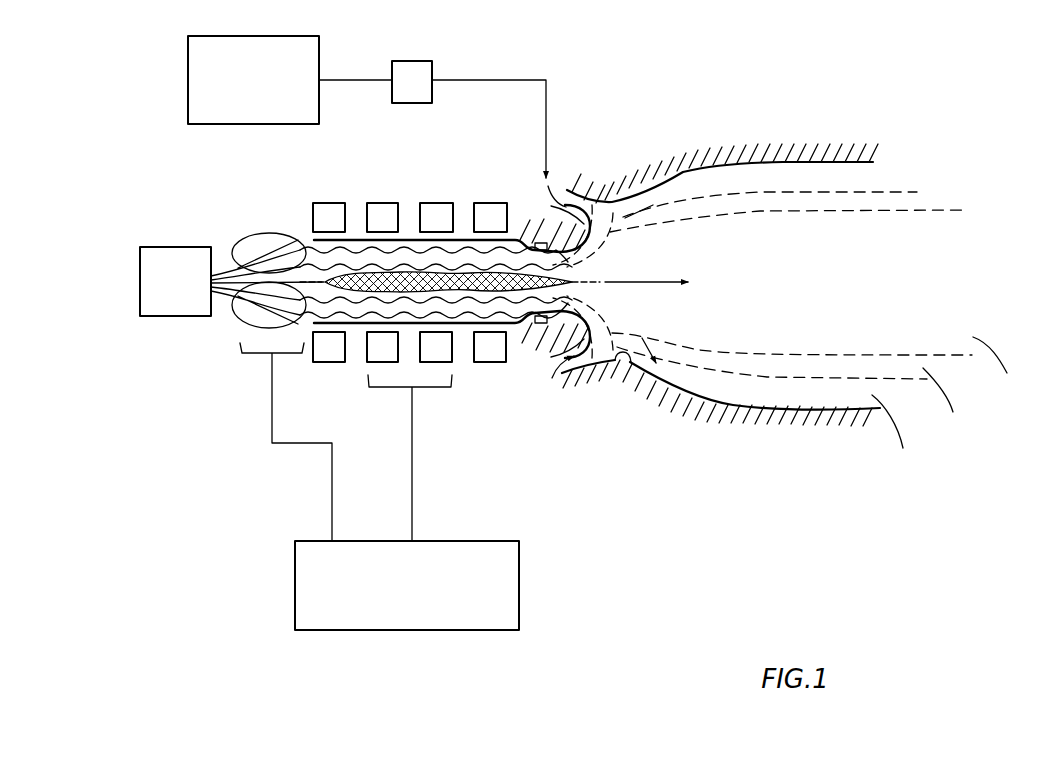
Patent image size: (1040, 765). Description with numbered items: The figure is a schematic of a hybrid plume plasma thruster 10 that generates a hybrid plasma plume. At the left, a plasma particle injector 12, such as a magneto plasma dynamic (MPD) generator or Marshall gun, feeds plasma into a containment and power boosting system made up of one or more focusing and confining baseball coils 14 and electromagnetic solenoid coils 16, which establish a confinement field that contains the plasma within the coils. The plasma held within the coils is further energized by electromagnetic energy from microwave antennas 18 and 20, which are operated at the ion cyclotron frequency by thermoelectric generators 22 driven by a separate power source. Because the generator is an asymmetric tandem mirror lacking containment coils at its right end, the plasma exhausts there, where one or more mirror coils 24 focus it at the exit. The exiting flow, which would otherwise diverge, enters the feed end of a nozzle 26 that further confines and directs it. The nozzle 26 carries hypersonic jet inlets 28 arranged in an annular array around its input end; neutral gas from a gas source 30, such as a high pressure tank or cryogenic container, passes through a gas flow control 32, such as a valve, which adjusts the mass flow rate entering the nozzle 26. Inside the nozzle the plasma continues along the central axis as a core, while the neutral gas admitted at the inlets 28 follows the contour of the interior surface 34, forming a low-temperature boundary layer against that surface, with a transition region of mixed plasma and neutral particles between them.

The hybrid plume plasma thruster 10 is at (66, 159).
The plasma particle injector 12 is at (140, 281).
The focusing and confining baseball coils 14 is at (253, 233).
The electromagnetic solenoid coils 16 is at (493, 362).
The microwave antenna 18 is at (250, 357).
The microwave antenna 20 is at (433, 388).
The thermoelectric generators 22 is at (292, 581).
The mirror coils 24 is at (540, 323).
The nozzle 26 is at (797, 449).
The hypersonic jet inlets 28 is at (628, 367).
The gas source 30 is at (188, 70).
The gas flow control 32 is at (422, 59).
The interior surface of the nozzle 34 is at (860, 163).